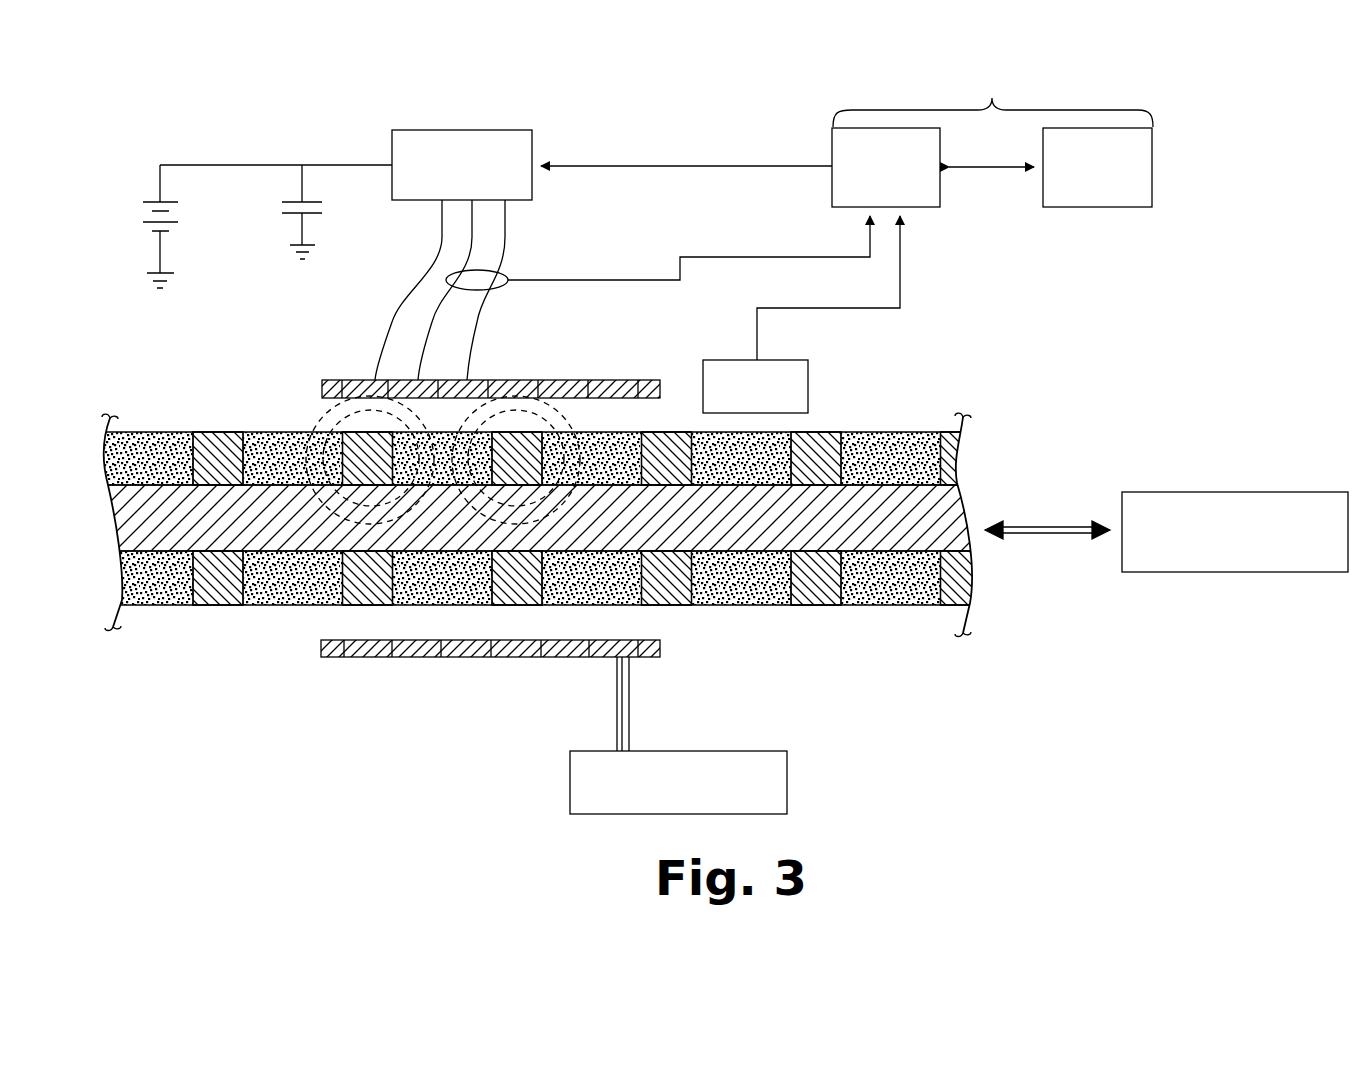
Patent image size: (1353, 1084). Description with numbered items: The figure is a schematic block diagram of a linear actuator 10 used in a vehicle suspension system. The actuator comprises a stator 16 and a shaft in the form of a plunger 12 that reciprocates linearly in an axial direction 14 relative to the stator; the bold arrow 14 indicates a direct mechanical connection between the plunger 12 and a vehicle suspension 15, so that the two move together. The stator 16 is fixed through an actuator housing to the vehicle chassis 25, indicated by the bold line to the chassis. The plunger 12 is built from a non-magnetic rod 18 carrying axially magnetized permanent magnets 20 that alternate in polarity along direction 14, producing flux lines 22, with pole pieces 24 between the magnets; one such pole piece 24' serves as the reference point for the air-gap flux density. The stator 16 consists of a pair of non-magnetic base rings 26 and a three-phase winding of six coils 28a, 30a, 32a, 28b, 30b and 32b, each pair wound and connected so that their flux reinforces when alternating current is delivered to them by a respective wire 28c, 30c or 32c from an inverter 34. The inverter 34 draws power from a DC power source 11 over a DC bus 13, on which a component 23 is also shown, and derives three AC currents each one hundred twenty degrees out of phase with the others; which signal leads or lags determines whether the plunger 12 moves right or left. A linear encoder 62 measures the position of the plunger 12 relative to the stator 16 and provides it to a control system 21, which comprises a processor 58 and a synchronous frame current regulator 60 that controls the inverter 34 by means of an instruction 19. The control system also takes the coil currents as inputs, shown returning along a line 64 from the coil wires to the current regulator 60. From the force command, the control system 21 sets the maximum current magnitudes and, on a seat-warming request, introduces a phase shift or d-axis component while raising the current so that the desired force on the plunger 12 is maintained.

The linear actuator 10 is at (208, 726).
The DC power source 11 is at (152, 200).
The plunger 12 is at (551, 518).
The DC bus 13 is at (242, 165).
The axial direction 14 is at (1056, 538).
The vehicle suspension 15 is at (1195, 492).
The stator 16 is at (609, 380).
The non-magnetic rod 18 is at (540, 518).
The instruction 19 is at (690, 165).
The permanent magnets 20 is at (545, 458).
The control system 21 is at (992, 171).
The flux lines 22 is at (325, 430).
The capacitor 23 is at (311, 204).
The pole pieces 24 is at (545, 578).
The pole piece 24' is at (267, 448).
The vehicle chassis 25 is at (787, 780).
The base rings 26 is at (660, 650).
The coil 28a is at (366, 658).
The coil 30a is at (413, 658).
The coil 32a is at (463, 658).
The coil 28b is at (522, 658).
The coil 30b is at (579, 658).
The coil 32b is at (633, 665).
The wire 28c is at (388, 330).
The wire 30c is at (472, 236).
The wire 32c is at (477, 323).
The inverter 34 is at (503, 130).
The processor 58 is at (1086, 208).
The synchronous frame current regulator 60 is at (917, 208).
The linear encoder 62 is at (723, 360).
The current feedback line 64 is at (739, 257).